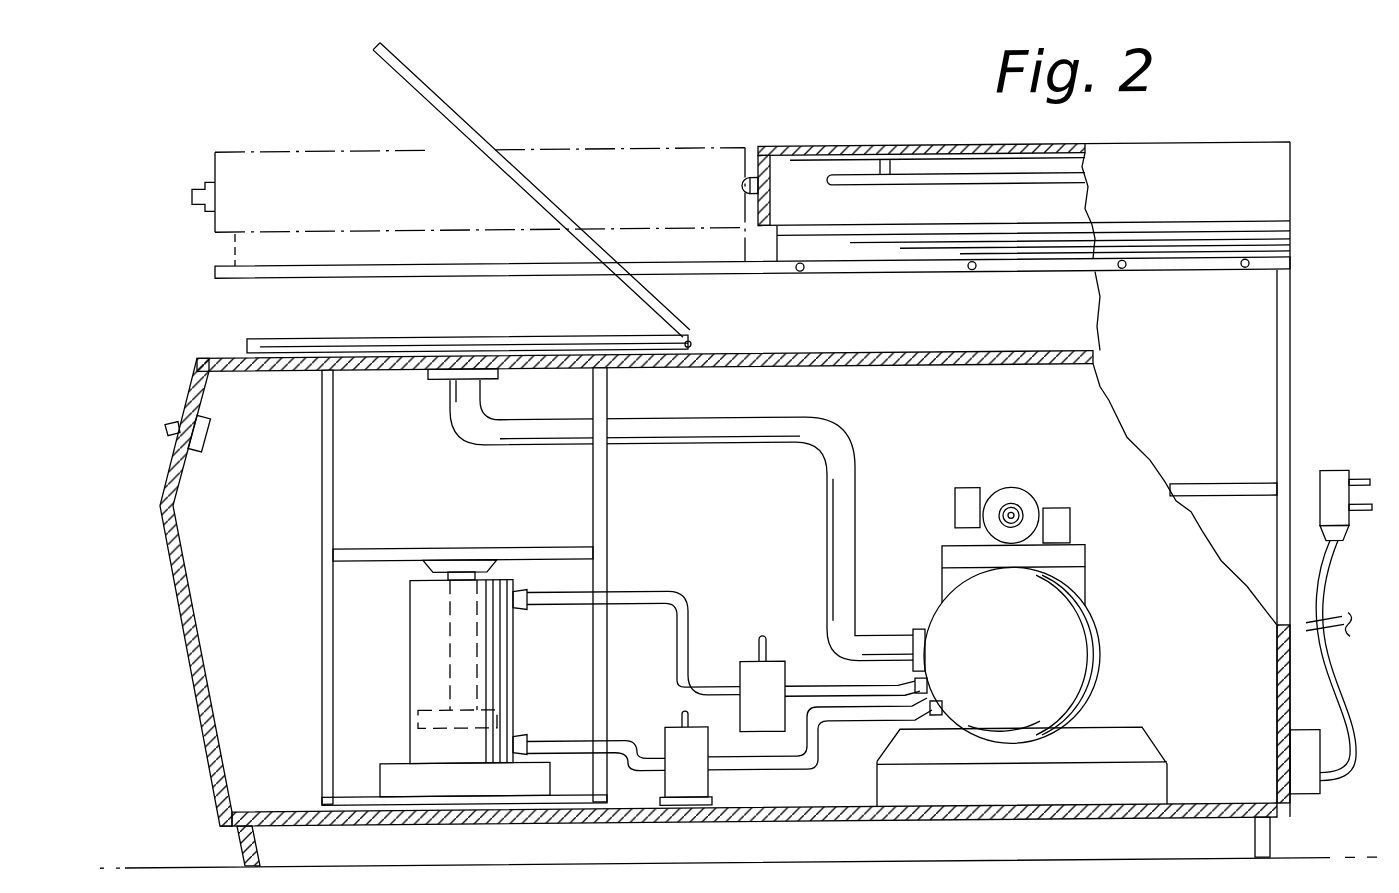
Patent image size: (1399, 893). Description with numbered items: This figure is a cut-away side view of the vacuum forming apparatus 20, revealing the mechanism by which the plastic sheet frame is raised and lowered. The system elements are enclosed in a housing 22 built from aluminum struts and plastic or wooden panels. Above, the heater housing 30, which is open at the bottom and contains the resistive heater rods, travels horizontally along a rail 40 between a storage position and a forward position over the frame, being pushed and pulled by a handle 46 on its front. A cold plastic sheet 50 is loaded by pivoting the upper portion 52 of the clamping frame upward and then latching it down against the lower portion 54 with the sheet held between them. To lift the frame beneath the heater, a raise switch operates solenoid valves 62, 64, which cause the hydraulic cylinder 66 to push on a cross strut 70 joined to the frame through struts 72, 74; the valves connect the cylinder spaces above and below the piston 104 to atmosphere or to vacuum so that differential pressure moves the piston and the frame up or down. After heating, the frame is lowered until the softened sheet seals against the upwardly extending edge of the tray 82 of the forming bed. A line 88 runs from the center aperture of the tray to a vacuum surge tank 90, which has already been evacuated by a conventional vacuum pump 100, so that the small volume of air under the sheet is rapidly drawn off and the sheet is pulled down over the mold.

The apparatus 20 is at (182, 295).
The housing 22 is at (207, 693).
The heater housing 30 is at (903, 148).
The rail 40 is at (875, 276).
The handle 46 is at (744, 186).
The plastic sheet 50 is at (377, 336).
The upper portion of frame 52 is at (425, 82).
The lower portion of frame 54 is at (255, 368).
The solenoid valve 62 is at (752, 670).
The solenoid valve 64 is at (672, 737).
The hydraulic cylinder 66 is at (428, 631).
The cross strut 70 is at (413, 547).
The strut 72 is at (334, 487).
The strut 74 is at (608, 487).
The tray 82 is at (500, 375).
The line 88 is at (838, 537).
The vacuum surge tank 90 is at (1073, 663).
The vacuum pump 100 is at (1022, 500).
The piston 104 is at (497, 684).